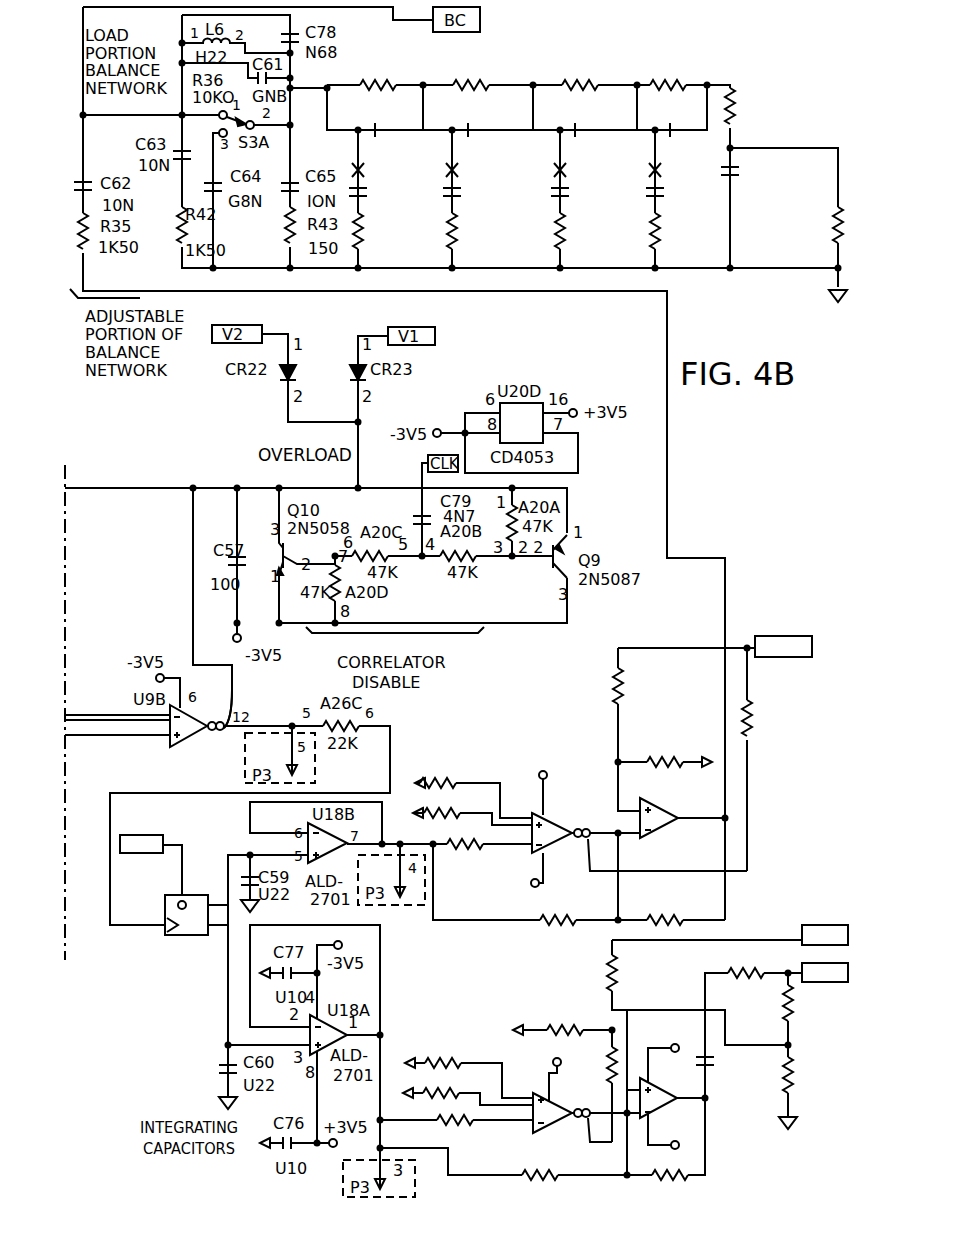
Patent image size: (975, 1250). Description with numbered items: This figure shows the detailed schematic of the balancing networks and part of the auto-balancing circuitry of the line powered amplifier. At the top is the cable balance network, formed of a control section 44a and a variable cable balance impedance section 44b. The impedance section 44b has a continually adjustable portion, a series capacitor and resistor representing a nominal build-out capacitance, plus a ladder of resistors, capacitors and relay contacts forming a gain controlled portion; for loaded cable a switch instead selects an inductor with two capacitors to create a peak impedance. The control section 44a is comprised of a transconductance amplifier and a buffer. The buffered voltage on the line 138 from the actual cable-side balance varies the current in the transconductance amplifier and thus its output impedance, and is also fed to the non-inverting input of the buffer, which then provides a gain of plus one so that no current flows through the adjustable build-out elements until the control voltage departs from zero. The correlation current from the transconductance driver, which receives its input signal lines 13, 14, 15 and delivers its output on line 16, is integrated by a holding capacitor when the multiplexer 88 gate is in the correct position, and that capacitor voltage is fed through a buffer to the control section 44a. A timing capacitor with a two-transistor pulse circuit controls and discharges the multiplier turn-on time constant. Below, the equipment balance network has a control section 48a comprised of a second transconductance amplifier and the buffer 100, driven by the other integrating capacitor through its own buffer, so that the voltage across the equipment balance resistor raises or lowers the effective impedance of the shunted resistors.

The control section 44a is at (527, 696).
The variable cable balance impedance section 44b is at (547, 66).
The control section 48a is at (493, 1001).
The buffer 100 is at (750, 1139).
The line 138 is at (747, 646).
The multiplexer 88 is at (170, 975).
The input signal line 13 is at (117, 737).
The input signal line 14 is at (128, 714).
The input signal line 15 is at (96, 714).
The comparator output line 16 is at (222, 696).